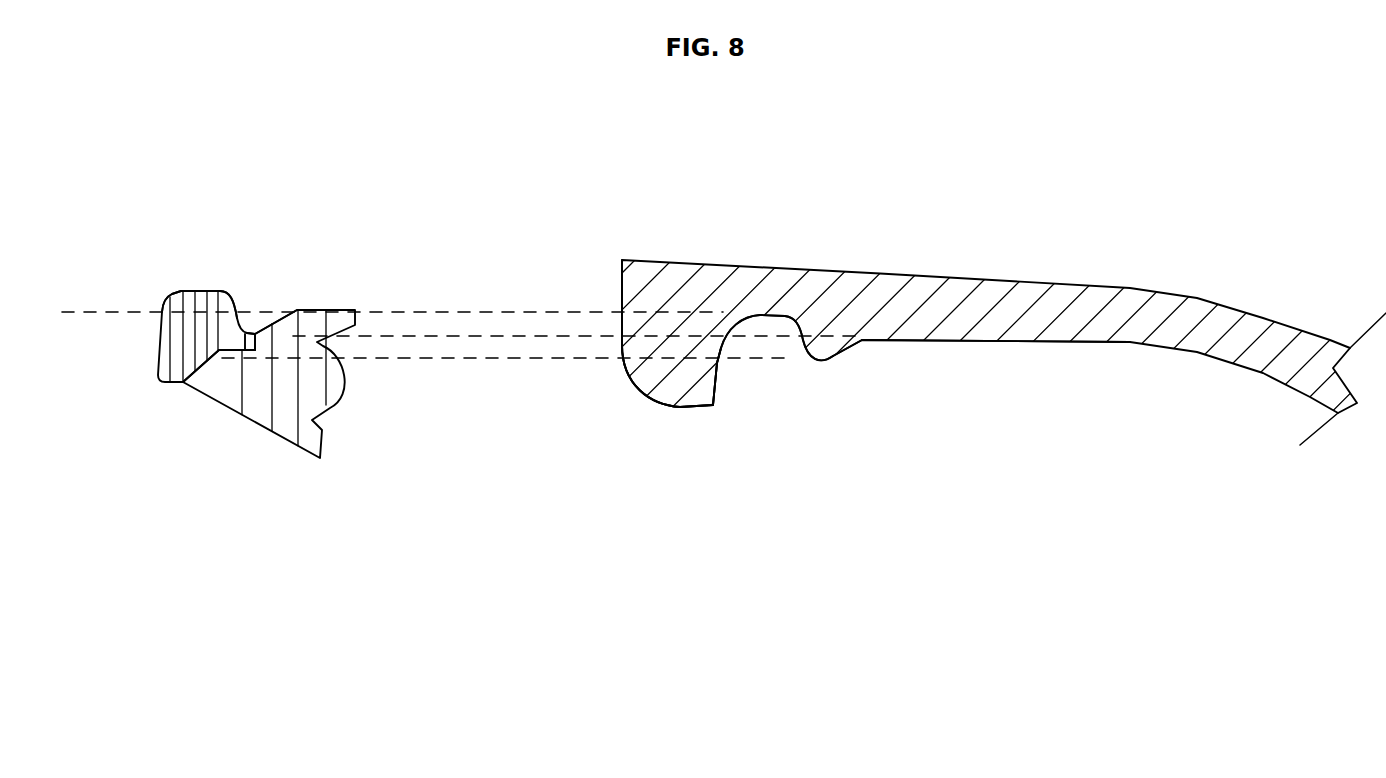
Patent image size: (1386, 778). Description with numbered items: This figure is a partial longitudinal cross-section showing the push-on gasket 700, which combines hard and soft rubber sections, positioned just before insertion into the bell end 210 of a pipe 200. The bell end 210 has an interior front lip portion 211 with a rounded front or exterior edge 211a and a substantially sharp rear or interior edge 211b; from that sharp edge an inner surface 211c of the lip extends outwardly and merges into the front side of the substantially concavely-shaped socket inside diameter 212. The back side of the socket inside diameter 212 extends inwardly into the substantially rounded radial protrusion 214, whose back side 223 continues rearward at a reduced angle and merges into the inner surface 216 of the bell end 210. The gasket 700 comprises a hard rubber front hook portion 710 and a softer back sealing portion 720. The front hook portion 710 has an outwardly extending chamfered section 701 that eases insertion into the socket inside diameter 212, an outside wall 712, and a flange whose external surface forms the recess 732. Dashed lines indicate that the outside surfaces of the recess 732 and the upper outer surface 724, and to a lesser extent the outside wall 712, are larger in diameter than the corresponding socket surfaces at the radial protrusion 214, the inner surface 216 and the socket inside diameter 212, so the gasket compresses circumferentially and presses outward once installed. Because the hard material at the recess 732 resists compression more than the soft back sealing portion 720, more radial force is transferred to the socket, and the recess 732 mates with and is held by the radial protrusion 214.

The pipe 200 is at (642, 207).
The bell end 210 is at (622, 260).
The interior front lip portion 211 is at (665, 412).
The rounded front or exterior edge 211a is at (640, 387).
The substantially sharp rear or interior edge 211b is at (712, 408).
The inner surface of the lip portion 211c is at (718, 368).
The socket inside diameter 212 is at (770, 315).
The substantially rounded radial protrusion 214 is at (818, 362).
The inner surface of the bell end 216 is at (897, 336).
The back side of the radial protrusion 223 is at (840, 352).
The gasket 700 is at (227, 286).
The chamfered section 701 is at (173, 302).
The front hook portion 710 is at (165, 355).
The outside wall 712 is at (203, 292).
The back sealing portion 720 is at (310, 398).
The upper outer surface 724 is at (327, 308).
The recess 732 is at (247, 333).